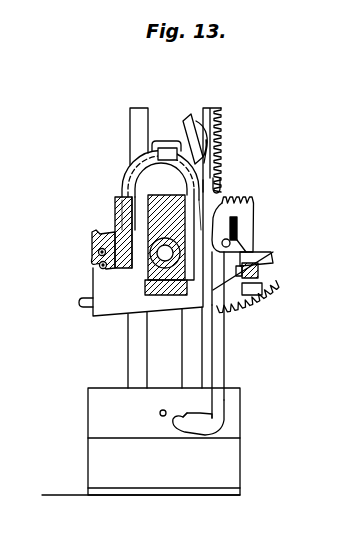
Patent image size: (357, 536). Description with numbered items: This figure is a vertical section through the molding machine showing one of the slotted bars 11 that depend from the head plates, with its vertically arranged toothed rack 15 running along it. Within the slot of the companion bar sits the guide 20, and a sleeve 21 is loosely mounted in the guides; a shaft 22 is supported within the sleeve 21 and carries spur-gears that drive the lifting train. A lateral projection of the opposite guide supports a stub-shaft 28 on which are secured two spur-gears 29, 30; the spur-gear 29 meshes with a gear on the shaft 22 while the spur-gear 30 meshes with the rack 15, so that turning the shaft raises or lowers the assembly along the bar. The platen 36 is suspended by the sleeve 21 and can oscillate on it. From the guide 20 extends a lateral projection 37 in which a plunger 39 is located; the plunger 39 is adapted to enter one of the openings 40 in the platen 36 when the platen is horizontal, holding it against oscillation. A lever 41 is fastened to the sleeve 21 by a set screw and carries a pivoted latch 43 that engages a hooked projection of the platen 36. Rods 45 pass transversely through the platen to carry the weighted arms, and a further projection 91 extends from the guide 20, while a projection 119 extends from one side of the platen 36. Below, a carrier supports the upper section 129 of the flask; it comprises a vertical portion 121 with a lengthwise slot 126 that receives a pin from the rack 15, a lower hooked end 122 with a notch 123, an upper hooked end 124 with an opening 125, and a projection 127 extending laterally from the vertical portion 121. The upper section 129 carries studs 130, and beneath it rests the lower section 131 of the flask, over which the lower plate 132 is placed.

The vertically slotted bar 11 is at (130, 130).
The toothed rack 15 is at (221, 129).
The guide 20 is at (140, 282).
The sleeve 21 is at (147, 246).
The shaft 22 is at (156, 246).
The stub-shaft 28 is at (242, 252).
The spur-gear 29 is at (252, 205).
The spur-gear 30 is at (266, 252).
The platen 36 is at (93, 317).
The lateral projection 37 is at (92, 235).
The plunger 39 is at (98, 252).
The opening 40 is at (99, 266).
The lever 41 is at (188, 125).
The latch 43 is at (207, 138).
The rod 45 is at (262, 288).
The projection 91 is at (145, 181).
The projection 119 is at (258, 268).
The vertical portion 121 is at (224, 349).
The lower hooked end 122 is at (224, 424).
The notch 123 is at (186, 413).
The upper hooked end 124 is at (137, 163).
The opening 125 is at (165, 148).
The slot 126 is at (222, 193).
The projection 127 is at (259, 260).
The upper section of the flask 129 is at (88, 418).
The stud 130 is at (160, 413).
The lower section of the flask 131 is at (240, 463).
The lower plate 132 is at (200, 495).